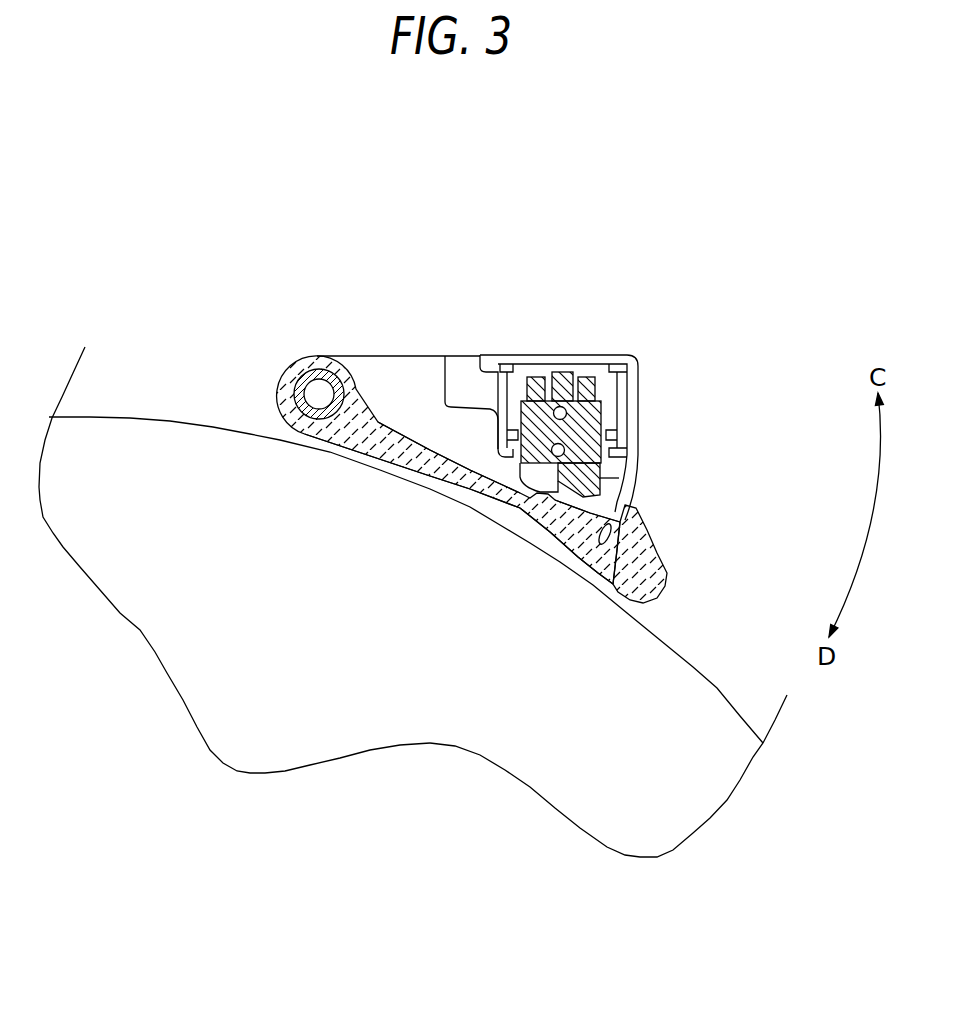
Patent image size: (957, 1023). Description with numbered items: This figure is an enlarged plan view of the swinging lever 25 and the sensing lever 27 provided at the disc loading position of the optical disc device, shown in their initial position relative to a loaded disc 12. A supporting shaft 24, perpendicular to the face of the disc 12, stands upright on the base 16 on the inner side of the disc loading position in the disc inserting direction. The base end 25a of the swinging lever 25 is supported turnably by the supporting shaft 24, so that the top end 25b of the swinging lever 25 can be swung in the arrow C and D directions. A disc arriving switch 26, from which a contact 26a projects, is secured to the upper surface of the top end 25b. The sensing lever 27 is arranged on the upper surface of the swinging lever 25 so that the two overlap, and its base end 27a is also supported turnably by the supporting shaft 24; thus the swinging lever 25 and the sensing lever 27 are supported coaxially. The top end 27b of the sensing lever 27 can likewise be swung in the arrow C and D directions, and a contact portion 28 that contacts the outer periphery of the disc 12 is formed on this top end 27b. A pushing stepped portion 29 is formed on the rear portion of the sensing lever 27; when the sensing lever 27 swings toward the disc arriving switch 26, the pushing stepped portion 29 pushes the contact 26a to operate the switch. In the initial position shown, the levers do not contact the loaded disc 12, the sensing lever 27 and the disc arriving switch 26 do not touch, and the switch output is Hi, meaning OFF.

The disc 12 is at (715, 689).
The base 16 is at (141, 358).
The supporting shaft 24 is at (313, 387).
The swinging lever 25 is at (348, 342).
The base end of the swinging lever 25a is at (392, 366).
The top end of the swinging lever 25b is at (640, 373).
The disc arriving switch 26 is at (603, 407).
The contact 26a is at (600, 474).
The sensing lever 27 is at (661, 533).
The base end of the sensing lever 27a is at (347, 448).
The top end of the sensing lever 27b is at (598, 577).
The contact portion 28 is at (666, 583).
The pushing stepped portion 29 is at (541, 491).